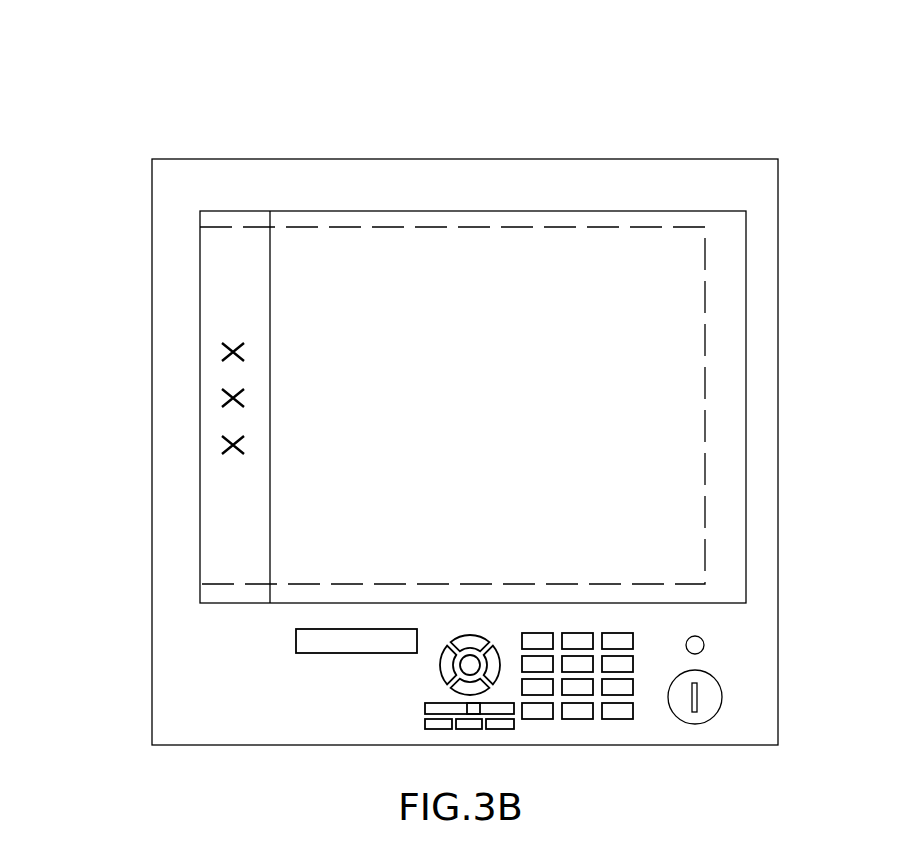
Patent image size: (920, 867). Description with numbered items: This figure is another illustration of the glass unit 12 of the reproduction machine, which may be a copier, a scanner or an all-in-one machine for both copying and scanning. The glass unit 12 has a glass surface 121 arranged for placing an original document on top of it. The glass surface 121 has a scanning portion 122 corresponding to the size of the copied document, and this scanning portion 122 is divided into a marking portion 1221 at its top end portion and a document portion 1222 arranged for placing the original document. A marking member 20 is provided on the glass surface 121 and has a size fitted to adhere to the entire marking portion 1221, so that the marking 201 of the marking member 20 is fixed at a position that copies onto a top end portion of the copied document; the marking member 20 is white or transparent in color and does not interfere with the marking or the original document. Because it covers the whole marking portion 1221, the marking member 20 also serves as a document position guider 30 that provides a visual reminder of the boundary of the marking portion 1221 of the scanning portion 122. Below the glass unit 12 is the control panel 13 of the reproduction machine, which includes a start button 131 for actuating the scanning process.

The scanning portion 122 is at (350, 106).
The glass unit 12 is at (708, 407).
The glass surface 121 is at (718, 280).
The marking portion 1221 is at (225, 267).
The document portion 1222 is at (320, 243).
The marking member 20 is at (216, 366).
The document position guider 30 is at (143, 357).
The marking 201 is at (228, 448).
The control panel 13 is at (598, 722).
The start button 131 is at (705, 693).